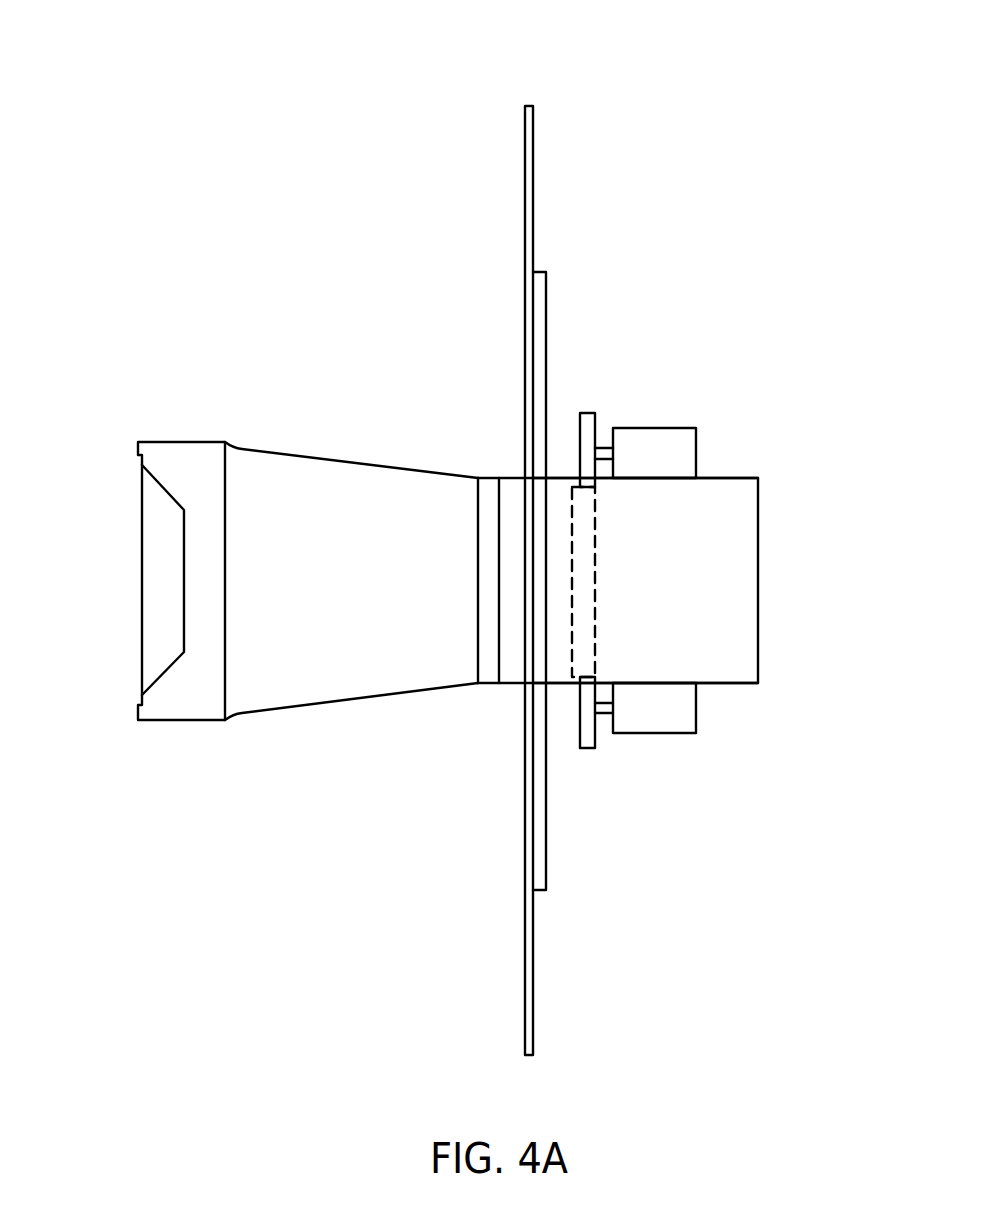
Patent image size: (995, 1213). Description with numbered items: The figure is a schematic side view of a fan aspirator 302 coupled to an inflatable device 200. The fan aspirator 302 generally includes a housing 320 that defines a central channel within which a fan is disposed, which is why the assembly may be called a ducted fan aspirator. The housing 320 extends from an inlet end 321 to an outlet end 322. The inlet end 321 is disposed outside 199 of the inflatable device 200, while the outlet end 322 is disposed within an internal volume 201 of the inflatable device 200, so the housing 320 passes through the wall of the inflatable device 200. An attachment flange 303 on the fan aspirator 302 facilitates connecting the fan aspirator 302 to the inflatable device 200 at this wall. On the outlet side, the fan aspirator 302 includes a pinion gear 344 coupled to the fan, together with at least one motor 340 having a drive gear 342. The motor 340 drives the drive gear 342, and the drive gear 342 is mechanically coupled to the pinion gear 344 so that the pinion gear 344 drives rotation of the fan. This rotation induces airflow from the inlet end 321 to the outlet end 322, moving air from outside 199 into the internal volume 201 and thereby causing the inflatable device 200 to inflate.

The fan aspirator 302 is at (178, 96).
The outside of the inflatable device 199 is at (462, 232).
The internal volume of the inflatable device 201 is at (758, 240).
The inflatable device 200 is at (525, 172).
The attachment flange 303 is at (543, 302).
The housing 320 is at (335, 460).
The inlet end 321 is at (138, 538).
The outlet end 322 is at (757, 528).
The motor 340 is at (672, 453).
The drive gear 342 is at (593, 422).
The pinion gear 344 is at (583, 660).